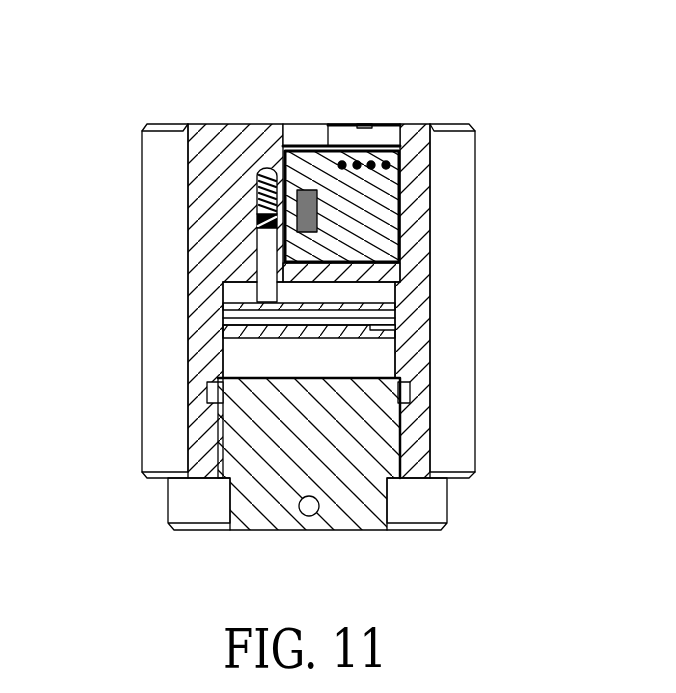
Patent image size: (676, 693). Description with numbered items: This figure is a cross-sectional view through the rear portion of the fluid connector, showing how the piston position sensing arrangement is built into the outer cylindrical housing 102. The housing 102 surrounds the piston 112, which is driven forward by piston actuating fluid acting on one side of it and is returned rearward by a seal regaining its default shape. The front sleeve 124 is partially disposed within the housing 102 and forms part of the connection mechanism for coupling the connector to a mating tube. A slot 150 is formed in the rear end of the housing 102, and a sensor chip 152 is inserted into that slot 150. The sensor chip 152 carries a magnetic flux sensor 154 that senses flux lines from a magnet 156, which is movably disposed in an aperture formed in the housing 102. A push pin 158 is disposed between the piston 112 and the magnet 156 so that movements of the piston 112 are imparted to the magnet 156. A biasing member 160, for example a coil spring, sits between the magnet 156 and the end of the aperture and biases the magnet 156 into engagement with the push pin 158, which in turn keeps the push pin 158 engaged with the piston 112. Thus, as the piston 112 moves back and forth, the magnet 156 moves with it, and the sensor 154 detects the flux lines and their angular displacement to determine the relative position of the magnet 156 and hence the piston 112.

The outer cylindrical housing 102 is at (459, 354).
The piston 112 is at (258, 311).
The front sleeve 124 is at (352, 505).
The slot 150 is at (307, 143).
The sensor chip 152 is at (382, 185).
The magnetic flux sensor 154 is at (318, 212).
The magnet 156 is at (262, 215).
The push pin 158 is at (262, 253).
The biasing member 160 is at (258, 183).